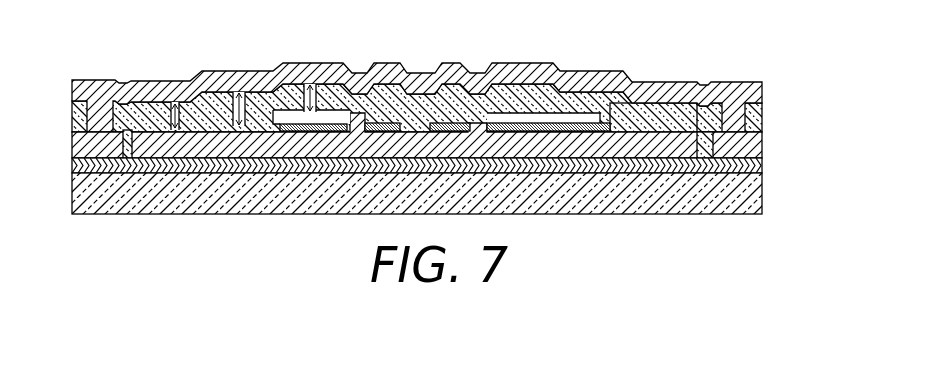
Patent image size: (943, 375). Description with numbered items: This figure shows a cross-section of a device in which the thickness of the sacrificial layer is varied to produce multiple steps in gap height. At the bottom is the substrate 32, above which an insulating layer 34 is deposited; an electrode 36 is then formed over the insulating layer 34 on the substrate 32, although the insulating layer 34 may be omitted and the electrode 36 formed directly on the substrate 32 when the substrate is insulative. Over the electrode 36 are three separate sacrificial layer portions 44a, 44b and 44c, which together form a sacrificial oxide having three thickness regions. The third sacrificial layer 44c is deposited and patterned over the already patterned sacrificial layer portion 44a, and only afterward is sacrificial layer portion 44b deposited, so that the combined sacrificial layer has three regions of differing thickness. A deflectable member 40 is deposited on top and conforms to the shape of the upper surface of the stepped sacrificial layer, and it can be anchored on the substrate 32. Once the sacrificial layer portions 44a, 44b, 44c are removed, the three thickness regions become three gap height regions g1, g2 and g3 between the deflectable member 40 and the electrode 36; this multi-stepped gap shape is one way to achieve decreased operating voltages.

The substrate 32 is at (72, 188).
The insulating layer 34 is at (72, 163).
The electrode 36 is at (745, 134).
The deflectable member 40 is at (740, 83).
The sacrificial layer portion 44a is at (547, 123).
The sacrificial layer portion 44b is at (623, 110).
The third sacrificial layer 44c is at (497, 113).
The gap height region g1 is at (238, 91).
The gap height region g2 is at (309, 84).
The gap height region g3 is at (174, 103).